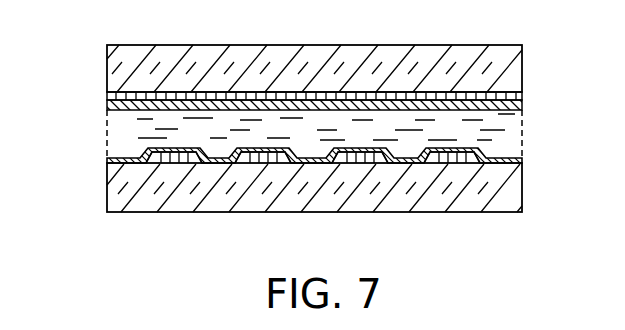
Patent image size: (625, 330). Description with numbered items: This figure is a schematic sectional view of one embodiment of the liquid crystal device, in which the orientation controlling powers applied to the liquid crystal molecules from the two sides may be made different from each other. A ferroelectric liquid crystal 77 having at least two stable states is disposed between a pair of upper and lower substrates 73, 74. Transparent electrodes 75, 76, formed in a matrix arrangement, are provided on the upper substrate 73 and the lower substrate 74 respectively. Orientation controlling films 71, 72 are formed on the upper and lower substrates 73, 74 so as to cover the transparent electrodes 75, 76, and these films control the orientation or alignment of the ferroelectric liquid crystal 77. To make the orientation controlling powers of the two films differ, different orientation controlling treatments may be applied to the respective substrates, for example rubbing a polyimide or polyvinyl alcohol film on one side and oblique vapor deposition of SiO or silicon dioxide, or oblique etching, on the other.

The orientation controlling film 71 is at (516, 108).
The orientation controlling film 72 is at (518, 162).
The upper substrate 73 is at (517, 66).
The lower substrate 74 is at (515, 197).
The transparent electrode 75 is at (108, 94).
The transparent electrode 76 is at (173, 163).
The ferroelectric liquid crystal 77 is at (110, 132).